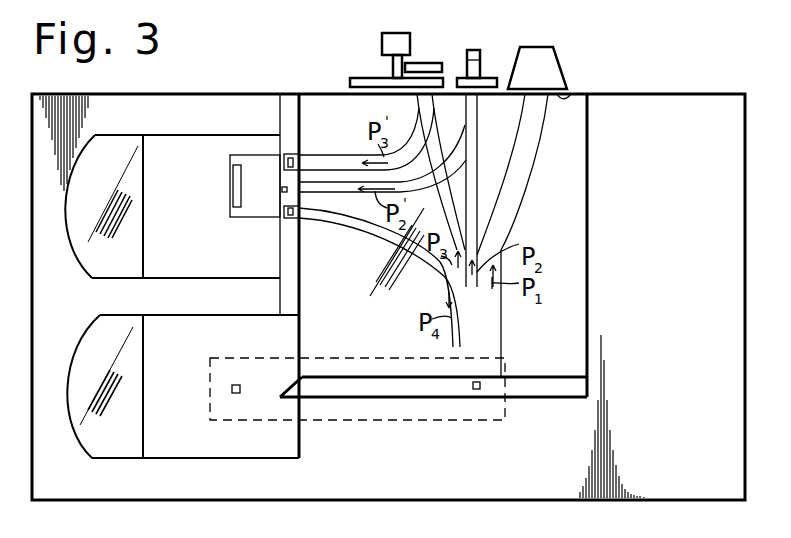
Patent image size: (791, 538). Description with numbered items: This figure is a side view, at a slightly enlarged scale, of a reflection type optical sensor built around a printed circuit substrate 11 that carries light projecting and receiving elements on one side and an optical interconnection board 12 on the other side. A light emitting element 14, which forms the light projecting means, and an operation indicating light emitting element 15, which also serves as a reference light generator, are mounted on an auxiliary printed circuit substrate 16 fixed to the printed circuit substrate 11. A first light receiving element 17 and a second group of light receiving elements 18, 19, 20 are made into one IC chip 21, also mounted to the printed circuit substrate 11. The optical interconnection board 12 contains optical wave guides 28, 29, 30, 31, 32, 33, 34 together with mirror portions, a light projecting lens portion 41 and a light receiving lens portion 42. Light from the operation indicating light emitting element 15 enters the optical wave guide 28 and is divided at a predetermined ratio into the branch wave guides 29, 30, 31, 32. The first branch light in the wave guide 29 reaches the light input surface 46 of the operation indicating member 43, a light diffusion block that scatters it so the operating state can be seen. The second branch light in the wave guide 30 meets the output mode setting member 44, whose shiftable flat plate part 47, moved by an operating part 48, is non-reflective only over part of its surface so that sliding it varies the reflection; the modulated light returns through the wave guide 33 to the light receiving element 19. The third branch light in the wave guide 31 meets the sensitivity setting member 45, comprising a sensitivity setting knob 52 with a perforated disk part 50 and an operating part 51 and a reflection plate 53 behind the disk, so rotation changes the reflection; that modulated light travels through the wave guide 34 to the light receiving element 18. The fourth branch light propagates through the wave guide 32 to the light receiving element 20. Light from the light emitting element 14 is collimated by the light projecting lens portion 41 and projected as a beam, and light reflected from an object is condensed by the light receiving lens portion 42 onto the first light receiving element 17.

The printed circuit substrate 11 is at (683, 490).
The optical interconnection board 12 is at (587, 249).
The light emitting element 14 is at (237, 393).
The operation indicating light emitting element 15 is at (475, 392).
The auxiliary printed circuit substrate 16 is at (501, 423).
The first light receiving element 17 is at (231, 172).
The light receiving element 18 is at (292, 153).
The light receiving element 19 is at (282, 188).
The light receiving element 20 is at (297, 220).
The IC chip 21 is at (250, 160).
The optical wave guide 28 is at (487, 332).
The optical wave guide 29 is at (540, 153).
The optical wave guide 30 is at (473, 118).
The optical wave guide 31 is at (445, 198).
The optical wave guide 32 is at (413, 249).
The optical wave guide 33 is at (333, 190).
The optical wave guide 34 is at (327, 160).
The light projecting lens portion 41 is at (97, 438).
The light receiving lens portion 42 is at (94, 255).
The operation indicating member 43 is at (553, 53).
The output mode setting member 44 is at (508, 28).
The sensitivity setting member 45 is at (470, 50).
The light input surface 46 is at (572, 92).
The flat plate part 47 is at (482, 78).
The operating part 48 is at (508, 36).
The disk part 50 is at (368, 78).
The operating part 51 is at (386, 44).
The sensitivity setting knob 52 is at (402, 32).
The reflection plate 53 is at (427, 63).